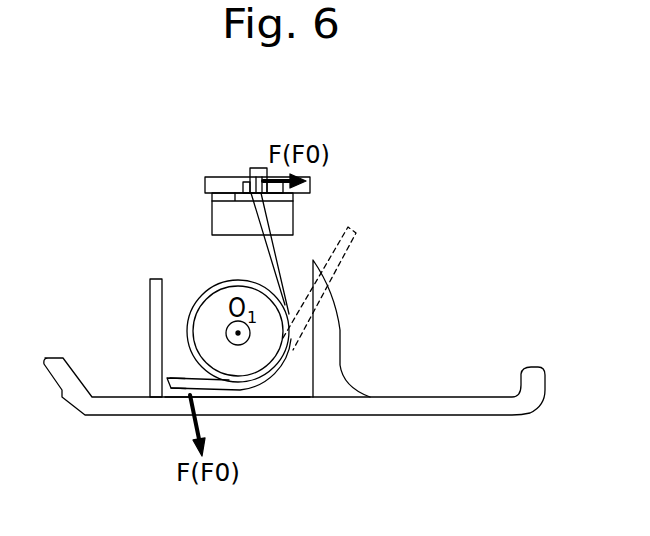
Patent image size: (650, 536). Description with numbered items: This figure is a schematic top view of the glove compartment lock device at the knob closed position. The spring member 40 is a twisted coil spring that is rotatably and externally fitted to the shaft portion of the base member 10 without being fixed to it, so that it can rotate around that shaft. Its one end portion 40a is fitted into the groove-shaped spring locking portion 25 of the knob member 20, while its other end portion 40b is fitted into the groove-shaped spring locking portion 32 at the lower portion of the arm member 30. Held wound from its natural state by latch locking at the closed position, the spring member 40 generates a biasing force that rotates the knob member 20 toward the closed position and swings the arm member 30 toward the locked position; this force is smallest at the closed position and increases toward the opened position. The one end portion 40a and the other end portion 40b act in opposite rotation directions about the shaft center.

The base member 10 is at (283, 218).
The knob member 20 is at (408, 400).
The spring locking portion 25 is at (226, 403).
The arm member 30 is at (310, 188).
The spring locking portion 32 is at (247, 188).
The spring member 40 is at (213, 292).
The one end portion 40a is at (168, 391).
The other end portion 40b is at (253, 169).